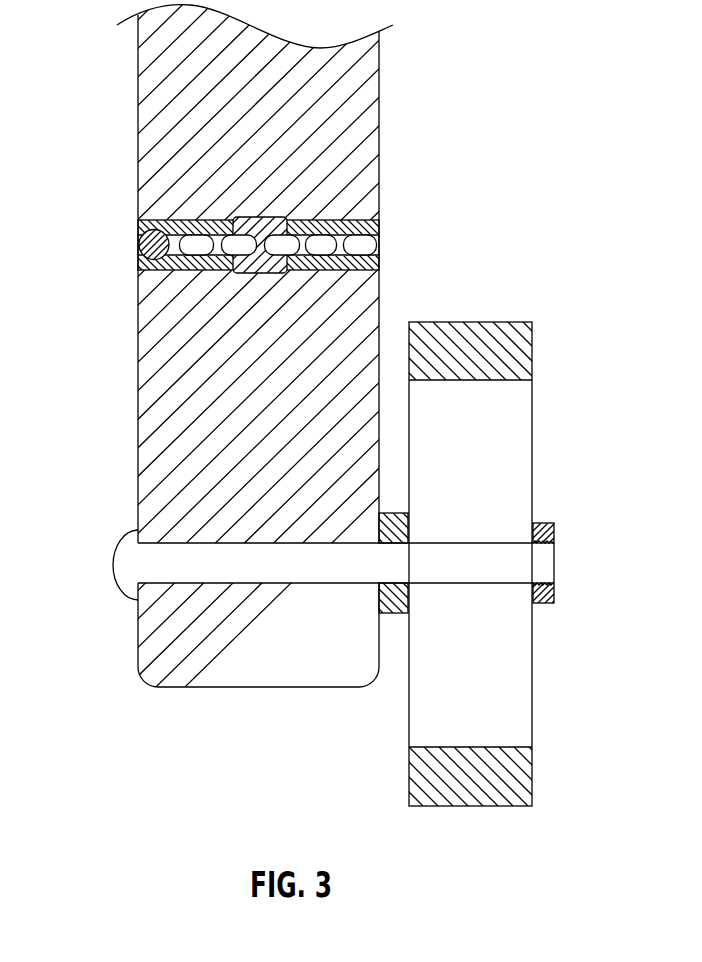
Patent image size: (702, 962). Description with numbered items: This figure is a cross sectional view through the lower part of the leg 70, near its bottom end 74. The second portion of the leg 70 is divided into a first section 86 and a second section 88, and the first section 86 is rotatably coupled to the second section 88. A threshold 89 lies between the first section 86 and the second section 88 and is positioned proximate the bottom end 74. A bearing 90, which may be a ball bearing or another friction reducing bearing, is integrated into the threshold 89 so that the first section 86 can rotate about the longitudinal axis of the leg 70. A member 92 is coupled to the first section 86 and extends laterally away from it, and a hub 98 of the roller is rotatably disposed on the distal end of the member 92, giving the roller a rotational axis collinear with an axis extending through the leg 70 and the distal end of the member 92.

The leg 70 is at (137, 62).
The bottom end 74 is at (258, 688).
The first section 86 is at (112, 446).
The second section 88 is at (399, 110).
The threshold 89 is at (399, 225).
The bearing 90 is at (140, 243).
The member 92 is at (393, 512).
The hub 98 is at (505, 541).